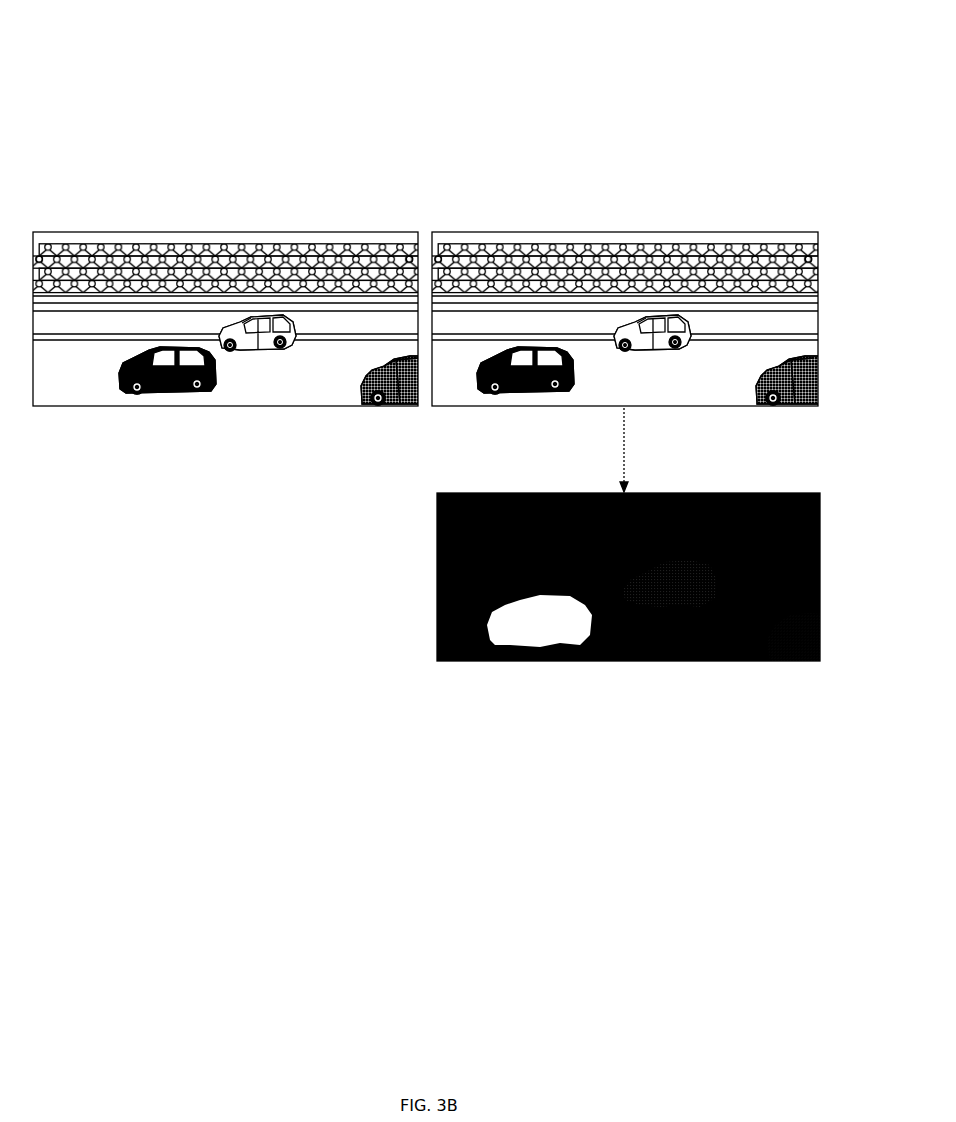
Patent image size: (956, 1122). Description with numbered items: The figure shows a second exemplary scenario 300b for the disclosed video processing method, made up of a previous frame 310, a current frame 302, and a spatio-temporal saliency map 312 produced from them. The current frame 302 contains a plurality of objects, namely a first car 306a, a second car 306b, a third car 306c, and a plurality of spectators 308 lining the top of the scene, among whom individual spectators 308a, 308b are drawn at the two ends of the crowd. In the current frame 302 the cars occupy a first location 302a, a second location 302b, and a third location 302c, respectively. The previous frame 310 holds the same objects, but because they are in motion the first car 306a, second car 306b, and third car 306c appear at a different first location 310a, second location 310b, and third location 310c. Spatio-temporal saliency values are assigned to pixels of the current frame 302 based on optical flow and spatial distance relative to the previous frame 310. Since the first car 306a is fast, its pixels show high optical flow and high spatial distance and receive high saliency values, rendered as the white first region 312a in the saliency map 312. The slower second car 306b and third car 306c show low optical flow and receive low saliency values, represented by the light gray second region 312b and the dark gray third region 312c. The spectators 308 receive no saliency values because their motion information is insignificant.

The second exemplary scenario 300b is at (737, 60).
The current frame 302 is at (760, 233).
The first location 302a is at (480, 389).
The second location 302b is at (610, 347).
The third location 302c is at (758, 399).
The first car 306a is at (149, 348).
The second car 306b is at (237, 323).
The third car 306c is at (403, 401).
The plurality of spectators 308 is at (320, 258).
The spectator 308a is at (412, 257).
The spectator 308b is at (45, 258).
The previous frame 310 is at (363, 233).
The first location 310a is at (119, 391).
The second location 310b is at (218, 347).
The third location 310c is at (362, 399).
The spatio-temporal saliency map 312 is at (629, 590).
The first region 312a is at (557, 630).
The second region 312b is at (698, 593).
The third region 312c is at (790, 647).